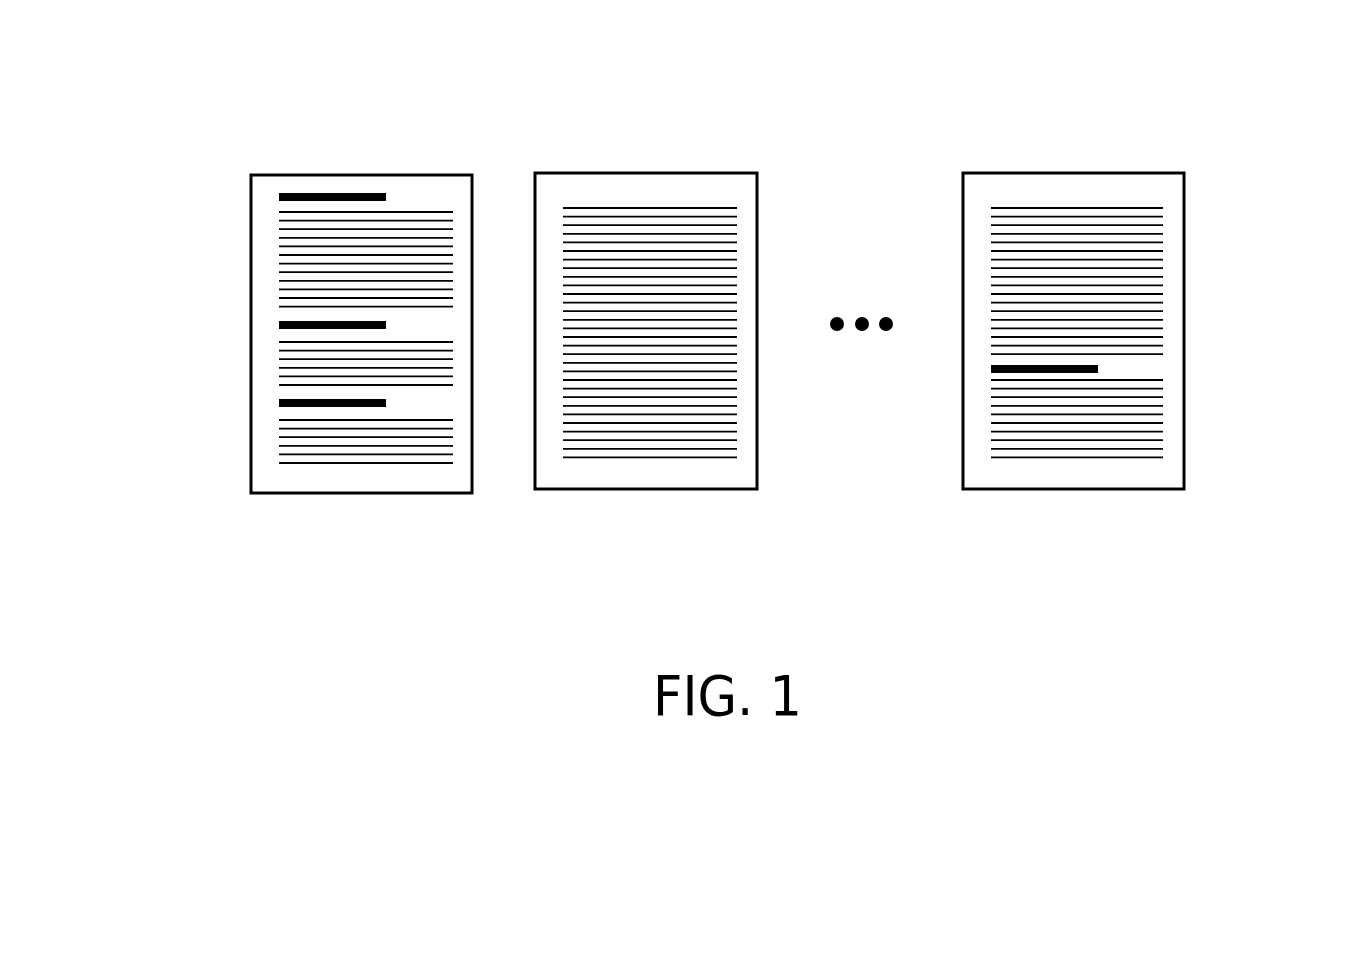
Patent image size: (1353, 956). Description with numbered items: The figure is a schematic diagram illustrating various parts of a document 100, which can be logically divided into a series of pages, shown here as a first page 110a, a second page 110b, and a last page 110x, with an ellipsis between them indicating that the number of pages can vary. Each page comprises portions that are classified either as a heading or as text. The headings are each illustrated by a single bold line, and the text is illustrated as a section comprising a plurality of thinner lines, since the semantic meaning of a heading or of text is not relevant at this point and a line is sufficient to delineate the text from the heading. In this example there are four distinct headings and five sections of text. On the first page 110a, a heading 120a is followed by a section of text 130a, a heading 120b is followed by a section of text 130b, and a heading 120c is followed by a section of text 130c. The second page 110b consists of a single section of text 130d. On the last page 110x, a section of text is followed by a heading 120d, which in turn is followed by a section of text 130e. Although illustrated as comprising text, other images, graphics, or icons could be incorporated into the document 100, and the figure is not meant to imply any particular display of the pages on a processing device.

The document 100 is at (450, 71).
The page 110a is at (404, 174).
The page 110b is at (676, 172).
The page 110x is at (1113, 172).
The heading 120a is at (279, 197).
The heading 120b is at (279, 325).
The heading 120c is at (279, 403).
The heading 120d is at (1098, 369).
The text 130a is at (284, 275).
The text 130b is at (280, 359).
The text 130c is at (458, 462).
The text 130d is at (740, 278).
The text 130e is at (1168, 417).